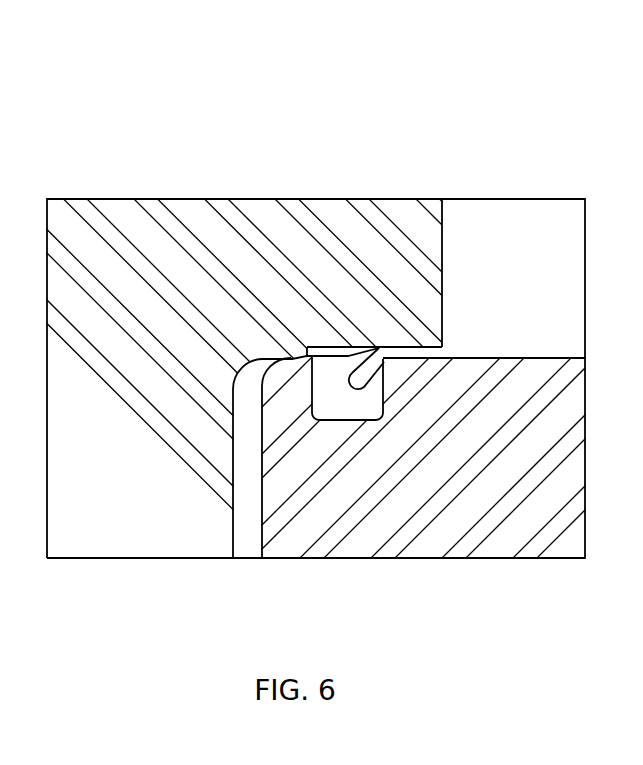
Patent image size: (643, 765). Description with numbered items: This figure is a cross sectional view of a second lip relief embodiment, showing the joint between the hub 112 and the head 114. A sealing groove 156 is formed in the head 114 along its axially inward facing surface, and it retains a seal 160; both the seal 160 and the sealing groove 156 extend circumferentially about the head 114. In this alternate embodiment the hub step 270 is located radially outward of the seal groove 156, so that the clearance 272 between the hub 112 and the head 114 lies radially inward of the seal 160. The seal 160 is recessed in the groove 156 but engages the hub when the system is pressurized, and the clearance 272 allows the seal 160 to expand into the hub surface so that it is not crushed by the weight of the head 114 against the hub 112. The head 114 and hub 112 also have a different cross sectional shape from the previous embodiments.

The hub 112 is at (103, 125).
The head 114 is at (515, 592).
The sealing groove 156 is at (323, 421).
The seal 160 is at (343, 410).
The hub step 270 is at (297, 352).
The clearance 272 is at (412, 353).